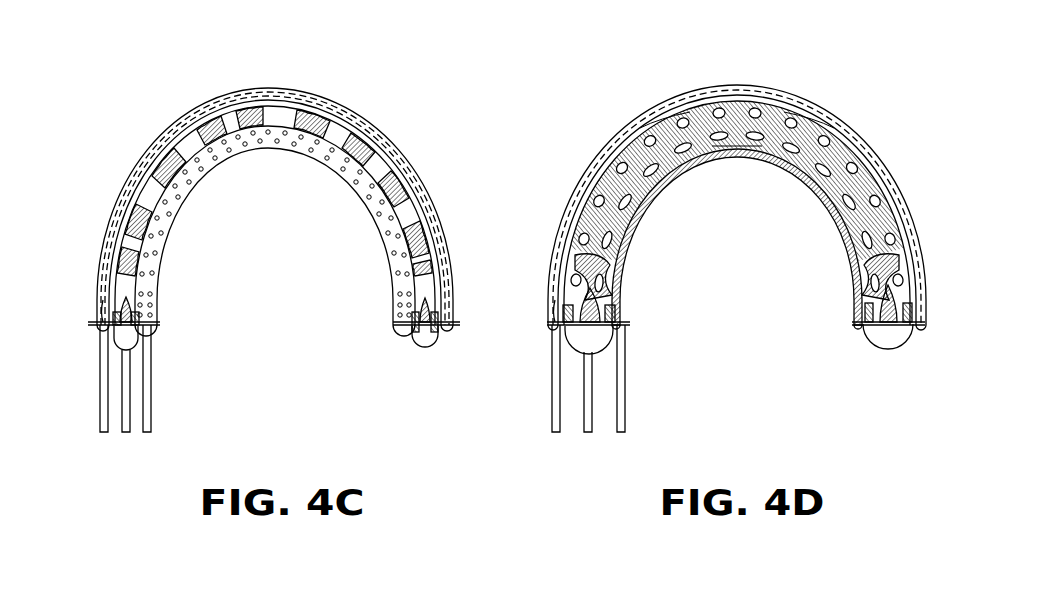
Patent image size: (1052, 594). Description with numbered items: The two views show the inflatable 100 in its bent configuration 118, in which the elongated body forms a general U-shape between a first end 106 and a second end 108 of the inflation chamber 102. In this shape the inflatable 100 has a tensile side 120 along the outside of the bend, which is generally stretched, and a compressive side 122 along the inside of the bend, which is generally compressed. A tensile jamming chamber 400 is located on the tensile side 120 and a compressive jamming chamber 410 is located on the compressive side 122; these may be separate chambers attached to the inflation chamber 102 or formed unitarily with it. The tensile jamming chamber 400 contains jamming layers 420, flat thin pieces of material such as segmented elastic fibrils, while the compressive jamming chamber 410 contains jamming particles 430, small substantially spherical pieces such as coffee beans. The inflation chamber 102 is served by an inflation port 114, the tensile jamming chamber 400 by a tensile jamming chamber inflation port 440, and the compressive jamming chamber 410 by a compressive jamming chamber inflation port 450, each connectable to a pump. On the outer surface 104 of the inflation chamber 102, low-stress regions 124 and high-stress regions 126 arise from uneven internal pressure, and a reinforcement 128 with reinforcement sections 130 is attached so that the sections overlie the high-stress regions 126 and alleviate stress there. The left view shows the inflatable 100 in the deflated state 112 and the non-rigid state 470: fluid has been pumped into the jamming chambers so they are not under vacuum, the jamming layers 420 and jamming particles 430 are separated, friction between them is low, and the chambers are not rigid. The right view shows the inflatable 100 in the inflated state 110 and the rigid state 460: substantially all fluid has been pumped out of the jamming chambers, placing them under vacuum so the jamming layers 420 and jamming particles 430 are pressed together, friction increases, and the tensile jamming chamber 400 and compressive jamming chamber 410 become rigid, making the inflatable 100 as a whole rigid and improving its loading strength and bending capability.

In FIG. 4C, the inflatable 100 is at (105, 373).
In FIG. 4D, the inflatable 100 is at (567, 335).
In FIG. 4C, the inflation chamber 102 is at (110, 335).
In FIG. 4D, the inflation chamber 102 is at (562, 332).
In FIG. 4C, the outer surface 104 is at (115, 300).
In FIG. 4D, the outer surface 104 is at (572, 290).
In FIG. 4C, the first end 106 is at (132, 342).
In FIG. 4D, the first end 106 is at (597, 342).
In FIG. 4C, the second end 108 is at (426, 350).
In FIG. 4D, the second end 108 is at (887, 350).
In FIG. 4D, the inflated state 110 is at (920, 297).
In FIG. 4C, the deflated state 112 is at (440, 222).
In FIG. 4C, the inflation port 114 is at (128, 367).
In FIG. 4D, the inflation port 114 is at (590, 365).
In FIG. 4C, the bent configuration 118 is at (388, 325).
In FIG. 4D, the bent configuration 118 is at (848, 325).
In FIG. 4C, the tensile side 120 is at (275, 88).
In FIG. 4D, the tensile side 120 is at (736, 84).
In FIG. 4C, the compressive side 122 is at (270, 152).
In FIG. 4D, the compressive side 122 is at (733, 157).
In FIG. 4C, the low-stress regions 124 is at (152, 238).
In FIG. 4D, the low-stress regions 124 is at (627, 220).
In FIG. 4C, the high-stress regions 126 is at (160, 193).
In FIG. 4D, the high-stress regions 126 is at (610, 150).
In FIG. 4C, the reinforcement 128 is at (313, 110).
In FIG. 4D, the reinforcement 128 is at (778, 96).
In FIG. 4C, the reinforcement sections 130 is at (197, 130).
In FIG. 4D, the reinforcement sections 130 is at (673, 112).
In FIG. 4C, the tensile jamming chamber 400 is at (363, 115).
In FIG. 4D, the tensile jamming chamber 400 is at (833, 110).
In FIG. 4C, the compressive jamming chamber 410 is at (232, 170).
In FIG. 4D, the compressive jamming chamber 410 is at (690, 170).
In FIG. 4C, the jamming layers 420 is at (383, 142).
In FIG. 4D, the jamming layers 420 is at (845, 125).
In FIG. 4C, the jamming particles 430 is at (317, 157).
In FIG. 4D, the jamming particles 430 is at (783, 157).
In FIG. 4C, the tensile jamming chamber inflation port 440 is at (115, 323).
In FIG. 4D, the tensile jamming chamber inflation port 440 is at (548, 322).
In FIG. 4C, the compressive jamming chamber inflation port 450 is at (157, 323).
In FIG. 4D, the compressive jamming chamber inflation port 450 is at (627, 323).
In FIG. 4D, the rigid state 460 is at (607, 190).
In FIG. 4C, the non-rigid state 470 is at (410, 167).